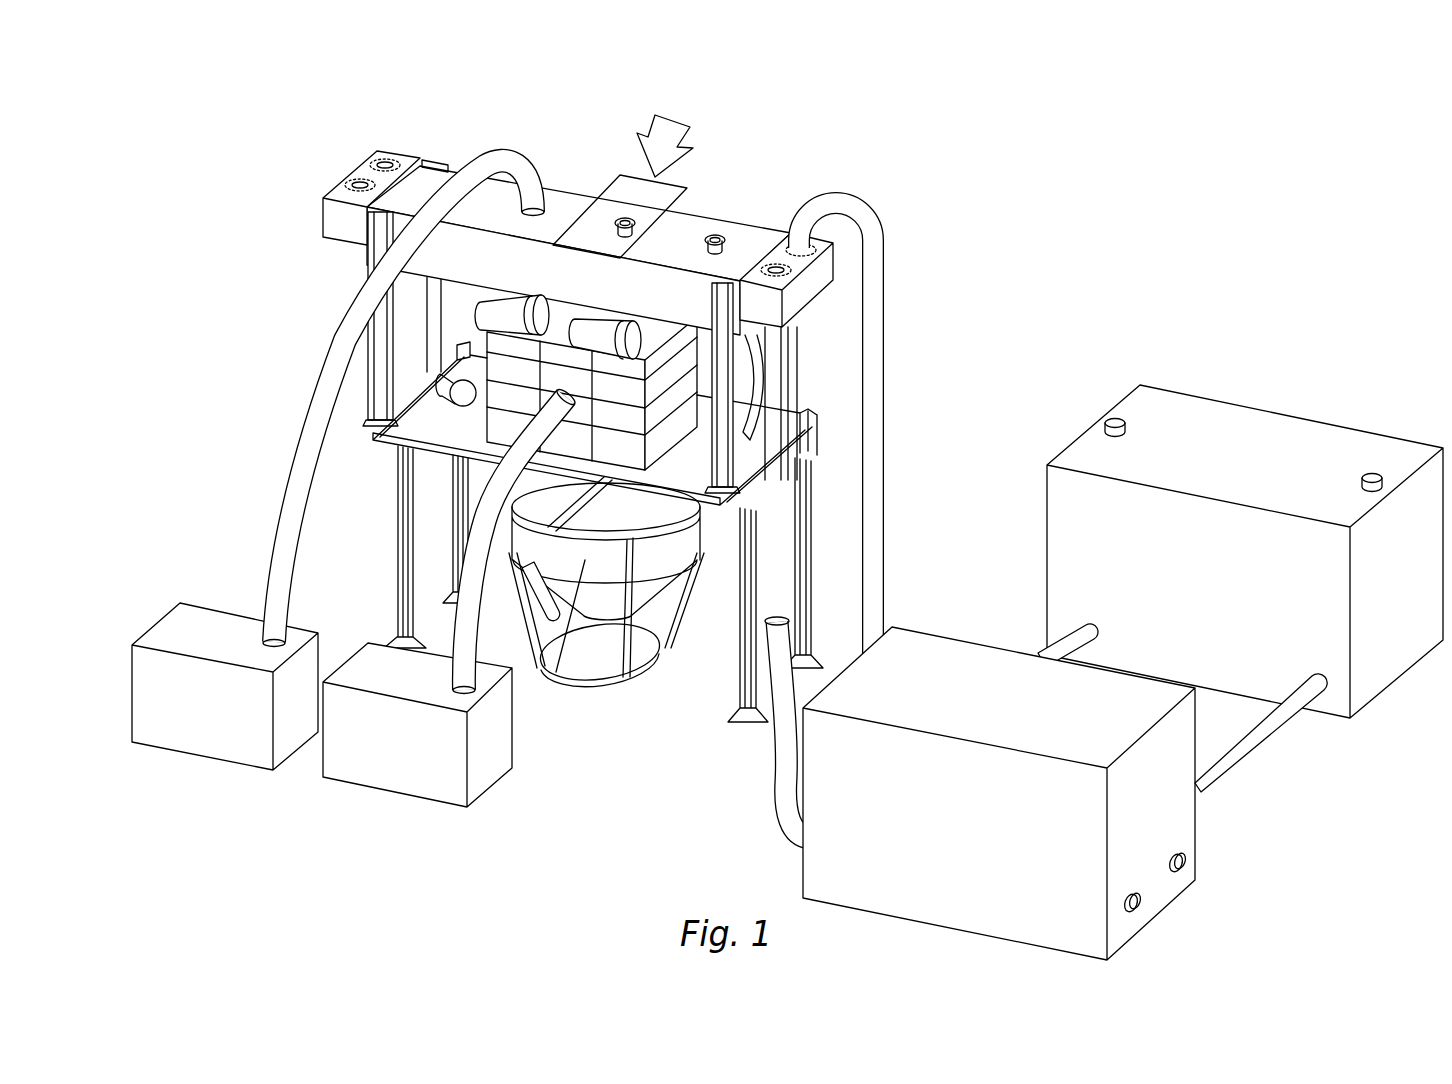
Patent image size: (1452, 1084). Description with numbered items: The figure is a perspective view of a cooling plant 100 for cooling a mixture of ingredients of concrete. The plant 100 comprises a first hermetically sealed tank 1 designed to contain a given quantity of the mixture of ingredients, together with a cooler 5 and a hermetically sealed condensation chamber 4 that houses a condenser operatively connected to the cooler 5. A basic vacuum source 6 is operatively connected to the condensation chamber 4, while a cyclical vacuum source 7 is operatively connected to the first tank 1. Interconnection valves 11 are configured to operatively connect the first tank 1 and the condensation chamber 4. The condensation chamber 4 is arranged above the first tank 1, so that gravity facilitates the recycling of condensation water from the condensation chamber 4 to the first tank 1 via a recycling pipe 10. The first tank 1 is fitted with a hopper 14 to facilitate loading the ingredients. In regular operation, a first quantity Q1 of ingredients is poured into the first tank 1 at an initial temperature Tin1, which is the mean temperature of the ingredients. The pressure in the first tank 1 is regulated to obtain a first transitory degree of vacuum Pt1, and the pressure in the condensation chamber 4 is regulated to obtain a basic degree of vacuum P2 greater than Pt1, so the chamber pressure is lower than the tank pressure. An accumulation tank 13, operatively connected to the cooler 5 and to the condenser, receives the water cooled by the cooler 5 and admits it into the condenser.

The cooling plant 100 is at (786, 498).
The first tank 1 is at (470, 334).
The recycling pipe 10 is at (655, 320).
The interconnection valves 11 is at (594, 312).
The hopper 14 is at (630, 187).
The condensation chamber 4 is at (822, 289).
The basic degree of vacuum P2 is at (790, 212).
The first transitory degree of vacuum Pt1 is at (468, 364).
The cooler 5 is at (1380, 653).
The basic vacuum source 6 is at (168, 760).
The cyclical vacuum source 7 is at (357, 795).
The accumulation tank 13 is at (1140, 860).
The first quantity Q1 is at (717, 116).
The initial temperature Tin1 is at (665, 130).